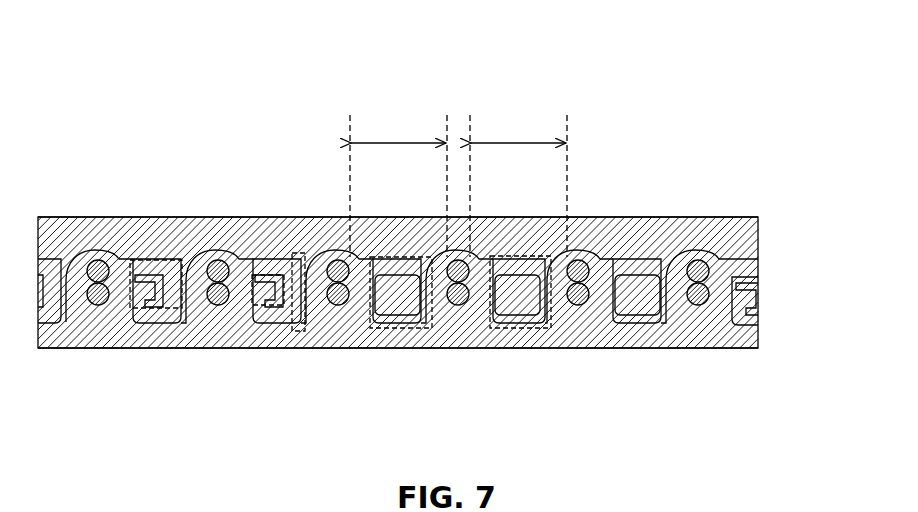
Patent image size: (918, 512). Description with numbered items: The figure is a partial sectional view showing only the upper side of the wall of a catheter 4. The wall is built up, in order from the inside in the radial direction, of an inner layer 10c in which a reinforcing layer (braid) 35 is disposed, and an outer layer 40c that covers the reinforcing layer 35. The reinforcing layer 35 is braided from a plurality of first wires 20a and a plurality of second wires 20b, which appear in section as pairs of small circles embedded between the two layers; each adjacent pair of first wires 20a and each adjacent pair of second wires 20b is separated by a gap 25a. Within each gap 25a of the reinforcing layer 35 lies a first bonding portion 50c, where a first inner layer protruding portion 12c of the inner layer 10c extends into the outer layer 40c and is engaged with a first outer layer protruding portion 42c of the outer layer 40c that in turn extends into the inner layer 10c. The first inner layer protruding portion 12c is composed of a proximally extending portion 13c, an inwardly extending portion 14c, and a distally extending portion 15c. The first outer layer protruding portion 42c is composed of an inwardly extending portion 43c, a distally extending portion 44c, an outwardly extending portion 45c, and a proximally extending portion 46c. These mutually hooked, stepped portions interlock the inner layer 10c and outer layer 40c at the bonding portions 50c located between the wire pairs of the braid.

The catheter 4 is at (398, 175).
The inner layer 10c is at (398, 376).
The outer layer 40c is at (398, 185).
The first inner layer protruding portion 12c is at (181, 217).
The proximally extending portion 13c is at (158, 242).
The inwardly extending portion 14c is at (217, 250).
The distally extending portion 15c is at (146, 334).
The first wires 20a is at (469, 272).
The second wires 20b is at (451, 320).
The gap 25a is at (458, 182).
The reinforcing layer (braid) 35 is at (412, 336).
The first outer layer protruding portion 42c is at (322, 365).
The inwardly extending portion 43c is at (313, 254).
The distally extending portion 44c is at (274, 330).
The outwardly extending portion 45c is at (237, 340).
The proximally extending portion 46c is at (275, 227).
The first bonding portion 50c is at (460, 331).